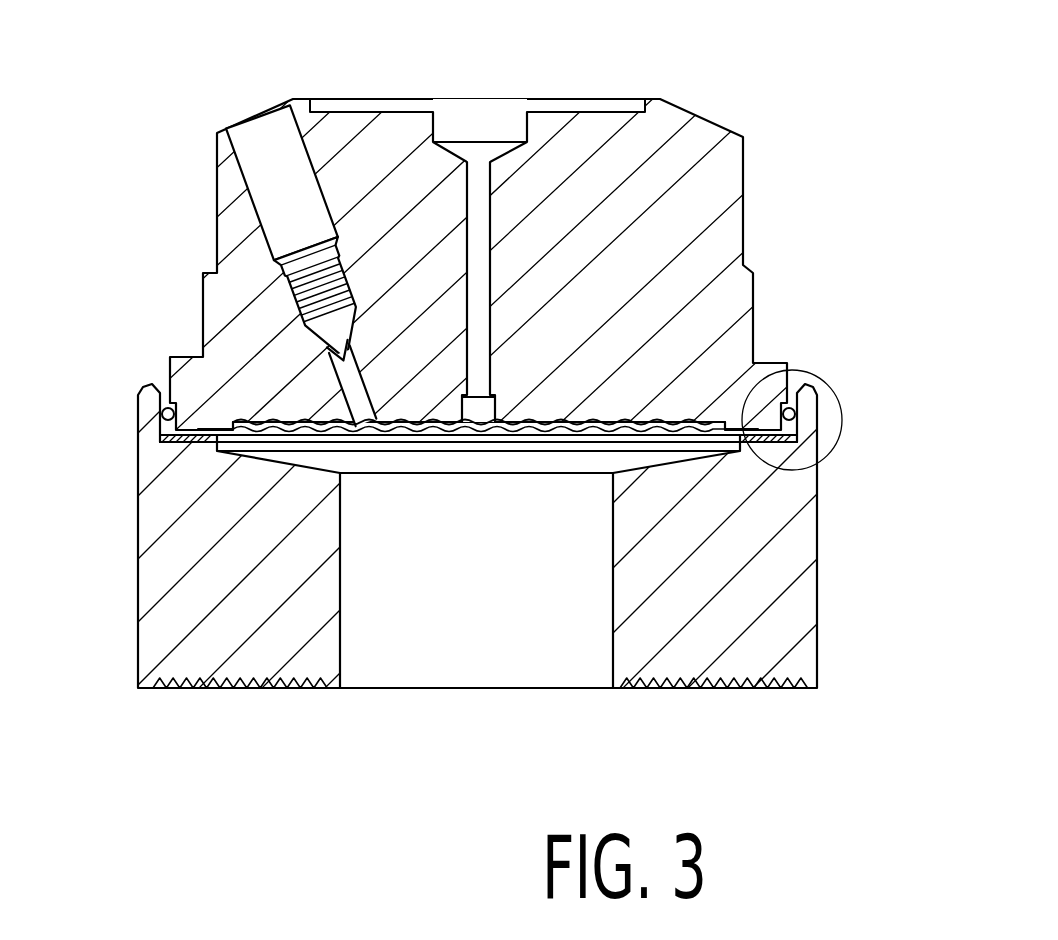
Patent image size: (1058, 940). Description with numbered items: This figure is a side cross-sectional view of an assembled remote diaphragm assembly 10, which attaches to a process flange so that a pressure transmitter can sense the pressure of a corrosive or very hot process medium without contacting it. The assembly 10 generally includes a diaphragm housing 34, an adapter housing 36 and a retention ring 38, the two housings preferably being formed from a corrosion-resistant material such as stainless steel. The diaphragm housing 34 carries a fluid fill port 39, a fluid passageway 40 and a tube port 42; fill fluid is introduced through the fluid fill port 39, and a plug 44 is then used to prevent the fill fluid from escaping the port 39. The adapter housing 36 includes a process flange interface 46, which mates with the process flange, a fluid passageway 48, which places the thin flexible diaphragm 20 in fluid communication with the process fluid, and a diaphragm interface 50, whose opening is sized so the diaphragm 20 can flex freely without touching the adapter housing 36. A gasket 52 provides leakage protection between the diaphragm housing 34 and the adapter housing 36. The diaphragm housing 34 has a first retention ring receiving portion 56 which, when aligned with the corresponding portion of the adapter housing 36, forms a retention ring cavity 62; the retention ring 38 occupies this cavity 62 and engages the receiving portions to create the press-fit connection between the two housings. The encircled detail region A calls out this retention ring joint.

The remote diaphragm assembly 10 is at (701, 85).
The thin flexible diaphragm 20 is at (545, 423).
The diaphragm housing 34 is at (730, 172).
The adapter housing 36 is at (810, 600).
The retention ring 38 is at (160, 413).
The fluid fill port 39 is at (257, 128).
The fluid passageway 40 is at (487, 272).
The tube port 42 is at (498, 127).
The plug 44 is at (283, 302).
The process flange interface 46 is at (702, 692).
The fluid passageway 48 is at (373, 672).
The diaphragm interface 50 is at (293, 460).
The gasket 52 is at (167, 440).
The first retention ring receiving portion 56 is at (773, 398).
The retention ring cavity 62 is at (793, 432).
The detail area A is at (834, 391).